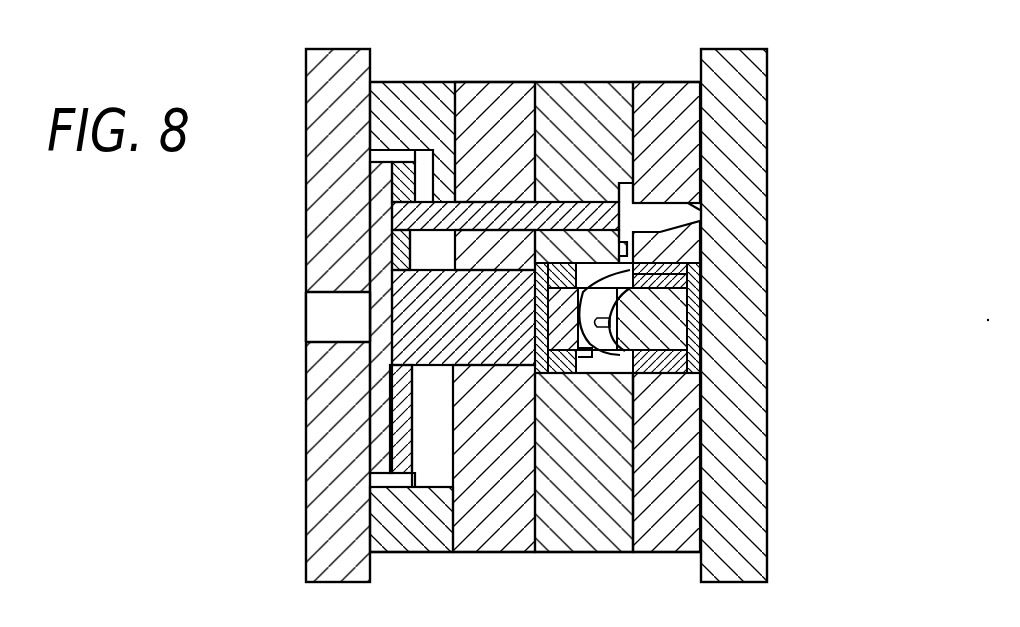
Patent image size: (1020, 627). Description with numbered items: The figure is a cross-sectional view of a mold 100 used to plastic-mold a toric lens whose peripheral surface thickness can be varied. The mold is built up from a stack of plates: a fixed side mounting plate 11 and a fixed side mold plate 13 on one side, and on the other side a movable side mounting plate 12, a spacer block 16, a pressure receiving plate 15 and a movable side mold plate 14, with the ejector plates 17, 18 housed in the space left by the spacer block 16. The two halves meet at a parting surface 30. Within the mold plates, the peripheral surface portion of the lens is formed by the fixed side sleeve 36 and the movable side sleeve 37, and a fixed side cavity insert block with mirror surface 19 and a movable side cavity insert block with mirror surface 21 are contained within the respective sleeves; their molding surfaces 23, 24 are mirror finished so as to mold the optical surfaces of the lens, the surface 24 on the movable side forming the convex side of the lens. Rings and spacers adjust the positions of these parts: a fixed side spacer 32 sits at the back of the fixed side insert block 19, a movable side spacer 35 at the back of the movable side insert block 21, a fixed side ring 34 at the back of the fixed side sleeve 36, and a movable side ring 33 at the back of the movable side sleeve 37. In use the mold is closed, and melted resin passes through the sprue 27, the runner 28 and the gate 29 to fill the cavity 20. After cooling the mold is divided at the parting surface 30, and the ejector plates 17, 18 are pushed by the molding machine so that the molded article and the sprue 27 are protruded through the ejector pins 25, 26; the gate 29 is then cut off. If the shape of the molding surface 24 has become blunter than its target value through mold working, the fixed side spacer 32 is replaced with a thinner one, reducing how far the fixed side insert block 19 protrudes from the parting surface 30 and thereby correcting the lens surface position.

The mold 100 is at (690, 46).
The fixed side mounting plate 11 is at (757, 60).
The movable side mounting plate 12 is at (316, 66).
The fixed side mold plate 13 is at (655, 88).
The movable side mold plate 14 is at (577, 90).
The pressure receiving plate 15 is at (494, 86).
The spacer block 16 is at (403, 86).
The ejector plate 17 is at (378, 475).
The ejector plate 18 is at (400, 468).
The fixed side cavity insert block with mirror surface 19 is at (690, 318).
The cavity 20 is at (690, 284).
The movable side cavity insert block with mirror surface 21 is at (690, 268).
The molding surface 23 is at (690, 350).
The molding surface 24 is at (690, 362).
The ejector pin 25 is at (437, 357).
The ejector pin 26 is at (432, 212).
The sprue 27 is at (713, 180).
The runner 28 is at (630, 255).
The gate 29 is at (695, 240).
The parting surface 30 is at (632, 554).
The fixed side spacer (liner) 32 is at (687, 345).
The movable side ring 33 is at (540, 376).
The fixed side ring 34 is at (690, 376).
The movable side spacer (liner) 35 is at (530, 346).
The fixed side sleeve 36 is at (657, 375).
The movable side sleeve 37 is at (565, 380).